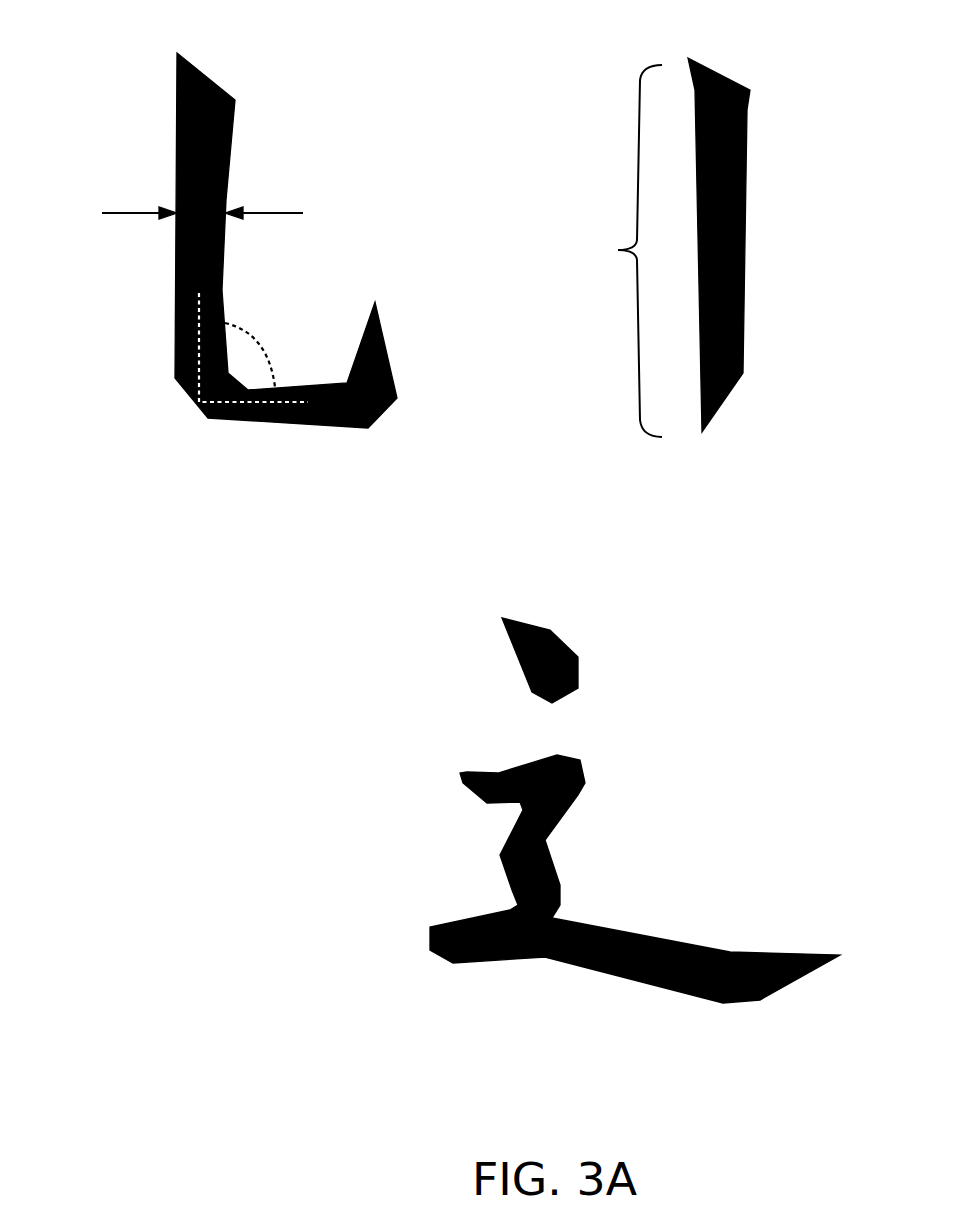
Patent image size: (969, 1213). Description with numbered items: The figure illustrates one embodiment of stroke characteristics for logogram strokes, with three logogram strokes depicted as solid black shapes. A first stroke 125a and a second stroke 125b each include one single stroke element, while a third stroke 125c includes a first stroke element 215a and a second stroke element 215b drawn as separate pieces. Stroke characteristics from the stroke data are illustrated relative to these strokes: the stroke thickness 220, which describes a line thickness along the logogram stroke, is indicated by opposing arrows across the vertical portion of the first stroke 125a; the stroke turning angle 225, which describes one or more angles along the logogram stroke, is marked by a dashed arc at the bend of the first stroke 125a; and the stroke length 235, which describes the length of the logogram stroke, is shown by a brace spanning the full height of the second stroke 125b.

The first stroke 125a is at (185, 52).
The second stroke 125b is at (747, 83).
The third stroke 125c is at (551, 785).
The first stroke element 215a is at (502, 618).
The second stroke element 215b is at (467, 772).
The stroke thickness 220 is at (127, 210).
The stroke turning angle 225 is at (258, 347).
The stroke length 235 is at (612, 251).